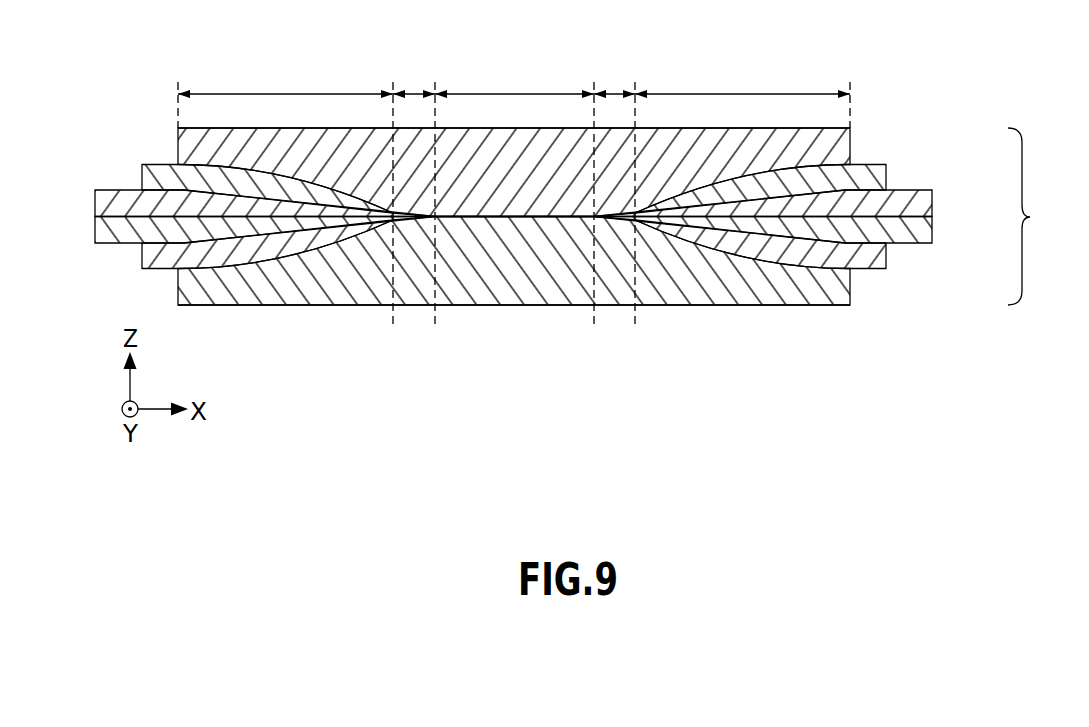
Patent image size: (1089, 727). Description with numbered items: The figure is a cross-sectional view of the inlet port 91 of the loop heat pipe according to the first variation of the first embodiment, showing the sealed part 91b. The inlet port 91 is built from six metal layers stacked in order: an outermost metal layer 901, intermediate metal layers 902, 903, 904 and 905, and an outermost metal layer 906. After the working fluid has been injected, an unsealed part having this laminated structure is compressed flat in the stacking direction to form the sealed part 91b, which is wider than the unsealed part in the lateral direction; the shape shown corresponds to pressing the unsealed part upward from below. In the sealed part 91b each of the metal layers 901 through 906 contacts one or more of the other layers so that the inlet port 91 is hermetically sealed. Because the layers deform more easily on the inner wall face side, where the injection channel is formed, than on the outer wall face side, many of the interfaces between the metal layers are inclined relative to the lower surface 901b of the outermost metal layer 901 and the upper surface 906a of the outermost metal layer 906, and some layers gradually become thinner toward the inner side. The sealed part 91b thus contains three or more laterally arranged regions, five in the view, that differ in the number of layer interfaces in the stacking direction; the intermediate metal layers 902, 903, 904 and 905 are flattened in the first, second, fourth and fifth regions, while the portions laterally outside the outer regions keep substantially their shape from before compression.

The inlet port 91 is at (586, 180).
The sealed part 91b is at (1043, 216).
The upper surface of the outermost metal layer 906a is at (833, 128).
The outermost metal layer 906 is at (853, 147).
The intermediate metal layer 905 is at (889, 175).
The intermediate metal layer 904 is at (935, 203).
The intermediate metal layer 903 is at (935, 229).
The intermediate metal layer 902 is at (889, 252).
The outermost metal layer 901 is at (853, 284).
The lower surface of the outermost metal layer 901b is at (833, 305).